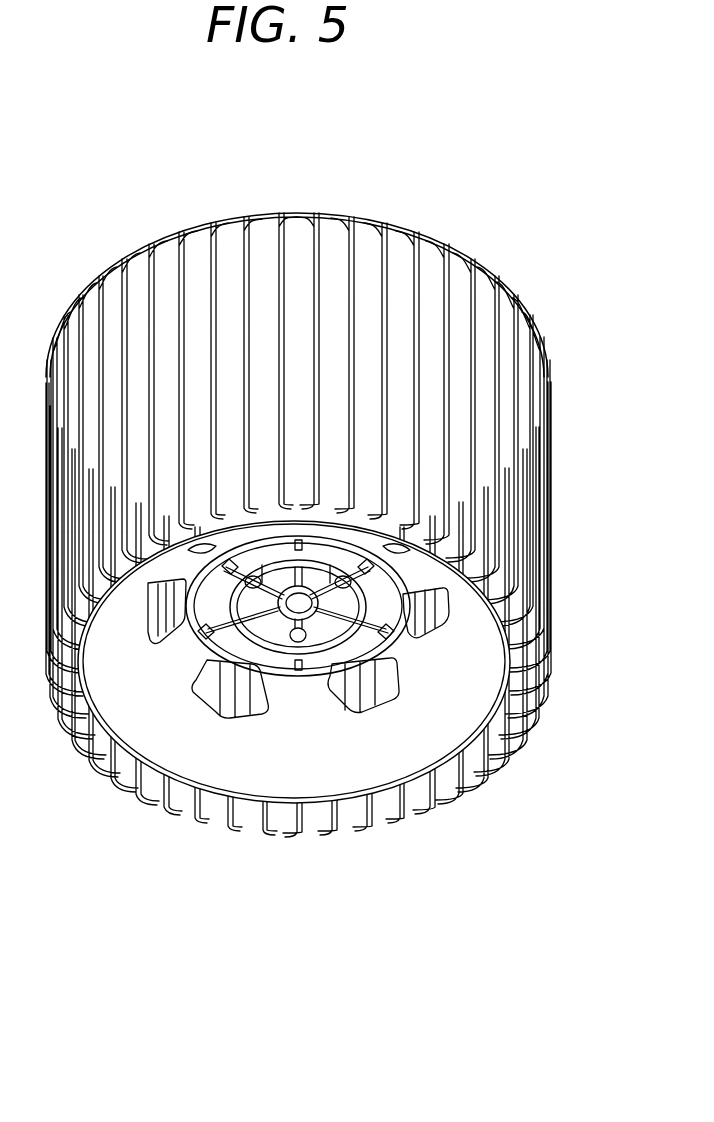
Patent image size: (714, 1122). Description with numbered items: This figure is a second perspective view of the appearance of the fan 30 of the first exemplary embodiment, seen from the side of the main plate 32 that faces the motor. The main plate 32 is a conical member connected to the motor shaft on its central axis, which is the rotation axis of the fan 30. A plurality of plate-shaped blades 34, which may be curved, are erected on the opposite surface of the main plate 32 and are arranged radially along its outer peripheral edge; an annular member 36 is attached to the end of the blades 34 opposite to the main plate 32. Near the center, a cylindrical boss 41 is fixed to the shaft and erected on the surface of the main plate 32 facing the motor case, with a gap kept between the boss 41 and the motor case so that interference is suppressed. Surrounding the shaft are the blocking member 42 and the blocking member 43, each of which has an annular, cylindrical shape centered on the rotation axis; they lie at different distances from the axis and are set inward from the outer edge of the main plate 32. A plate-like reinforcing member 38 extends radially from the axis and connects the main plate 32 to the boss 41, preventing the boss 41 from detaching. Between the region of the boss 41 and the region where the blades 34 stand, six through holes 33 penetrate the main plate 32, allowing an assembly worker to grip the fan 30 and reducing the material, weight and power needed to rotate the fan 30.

The fan 30 is at (487, 158).
The main plate 32 is at (123, 703).
The through holes 33 is at (213, 710).
The blades 34 is at (500, 530).
The annular member 36 is at (452, 244).
The reinforcing member 38 is at (253, 588).
The boss 41 is at (316, 620).
The blocking member 42 is at (366, 612).
The blocking member 43 is at (405, 595).